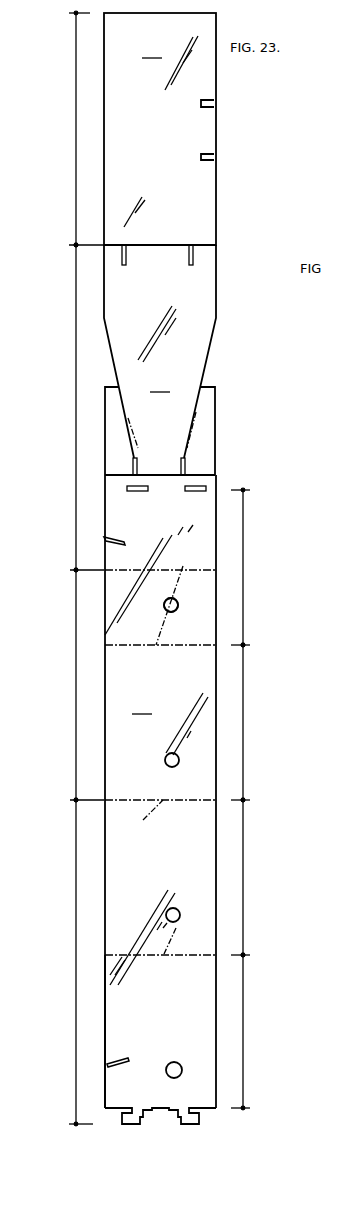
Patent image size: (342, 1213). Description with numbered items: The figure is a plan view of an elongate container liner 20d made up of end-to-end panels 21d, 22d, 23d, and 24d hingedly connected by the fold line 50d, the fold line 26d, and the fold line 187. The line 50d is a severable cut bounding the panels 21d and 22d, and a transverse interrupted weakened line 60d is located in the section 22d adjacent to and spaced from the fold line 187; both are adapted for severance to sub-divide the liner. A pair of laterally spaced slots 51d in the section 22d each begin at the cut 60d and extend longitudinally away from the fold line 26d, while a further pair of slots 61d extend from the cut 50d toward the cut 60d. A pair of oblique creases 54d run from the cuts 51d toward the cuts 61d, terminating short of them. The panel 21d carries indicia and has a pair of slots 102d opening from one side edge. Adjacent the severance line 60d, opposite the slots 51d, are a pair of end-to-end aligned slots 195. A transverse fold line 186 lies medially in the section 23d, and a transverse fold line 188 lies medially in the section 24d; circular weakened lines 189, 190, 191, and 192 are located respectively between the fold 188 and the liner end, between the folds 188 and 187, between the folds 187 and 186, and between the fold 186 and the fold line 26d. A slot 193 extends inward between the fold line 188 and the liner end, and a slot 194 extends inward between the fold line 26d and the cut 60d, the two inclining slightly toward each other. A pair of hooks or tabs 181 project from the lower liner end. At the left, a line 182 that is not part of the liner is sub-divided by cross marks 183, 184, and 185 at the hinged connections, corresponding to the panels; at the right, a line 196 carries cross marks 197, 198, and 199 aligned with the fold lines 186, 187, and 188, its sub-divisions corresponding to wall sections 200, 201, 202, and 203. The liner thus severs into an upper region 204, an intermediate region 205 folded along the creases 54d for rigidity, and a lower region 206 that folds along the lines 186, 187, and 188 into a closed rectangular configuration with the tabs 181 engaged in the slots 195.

The container liner 20d is at (228, 433).
The liner panel 21d is at (106, 124).
The liner section 22d is at (122, 362).
The liner section 23d is at (115, 670).
The liner section 24d is at (118, 918).
The fold line 26d is at (168, 597).
The severable cut 50d is at (160, 243).
The slots 51d is at (182, 457).
The fold lines 54d is at (196, 409).
The weakened line 60d is at (207, 472).
The slots 61d is at (191, 266).
The slots 102d is at (214, 106).
The hooks or tabs 181 is at (182, 1124).
The line 182 is at (76, 110).
The cross mark 183 is at (76, 243).
The cross mark 184 is at (76, 568).
The cross mark 185 is at (76, 802).
The fold line 186 is at (176, 605).
The fold line 187 is at (160, 814).
The fold line 188 is at (183, 937).
The circular weakened line 189 is at (176, 1062).
The circular weakened line 190 is at (173, 908).
The circular weakened line 191 is at (165, 762).
The circular weakened line 192 is at (165, 610).
The slot 193 is at (122, 1066).
The slot 194 is at (136, 532).
The slots 195 is at (193, 492).
The line 196 is at (246, 1092).
The cross mark 197 is at (245, 644).
The cross mark 198 is at (245, 799).
The cross mark 199 is at (245, 954).
The wall section 200 is at (213, 1038).
The wall section 201 is at (213, 905).
The wall section 202 is at (213, 752).
The wall section 203 is at (213, 602).
The upper region 204 is at (161, 131).
The intermediate region 205 is at (160, 426).
The lower region 206 is at (144, 707).